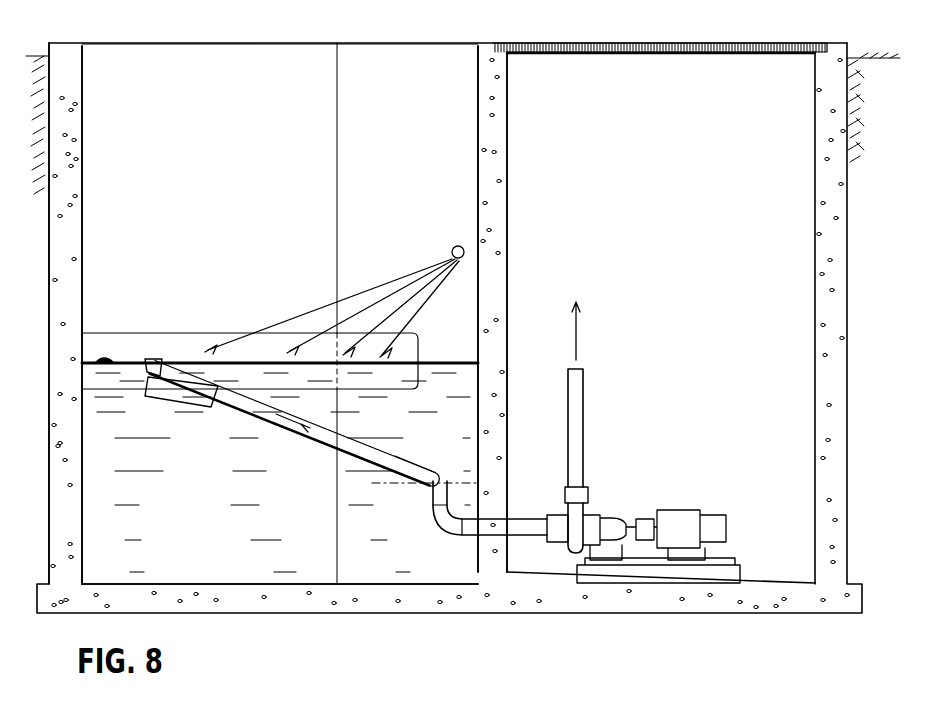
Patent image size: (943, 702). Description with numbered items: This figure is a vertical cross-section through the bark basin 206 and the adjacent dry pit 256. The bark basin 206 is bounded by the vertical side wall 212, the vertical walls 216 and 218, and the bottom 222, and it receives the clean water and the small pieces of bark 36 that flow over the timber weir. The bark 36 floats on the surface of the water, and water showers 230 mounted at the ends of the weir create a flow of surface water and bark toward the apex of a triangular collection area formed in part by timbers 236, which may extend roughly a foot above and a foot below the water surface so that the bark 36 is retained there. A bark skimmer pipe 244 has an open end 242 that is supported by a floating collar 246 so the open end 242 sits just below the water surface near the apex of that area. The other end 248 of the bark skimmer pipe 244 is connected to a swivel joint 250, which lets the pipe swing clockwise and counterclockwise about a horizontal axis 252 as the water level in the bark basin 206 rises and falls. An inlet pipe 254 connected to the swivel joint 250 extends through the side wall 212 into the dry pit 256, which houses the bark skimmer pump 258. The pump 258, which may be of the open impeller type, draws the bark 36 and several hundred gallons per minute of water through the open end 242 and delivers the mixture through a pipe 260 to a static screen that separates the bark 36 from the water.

The bark basin 206 is at (193, 521).
The vertical side wall 212 is at (476, 72).
The vertical wall 216 is at (82, 175).
The vertical wall 218 is at (236, 60).
The bottom 222 is at (288, 584).
The water shower 230 is at (457, 246).
The timber 236 is at (428, 349).
The small pieces of bark 36 is at (105, 353).
The open end 242 is at (173, 358).
The bark skimmer pipe 244 is at (320, 445).
The floating collar 246 is at (193, 395).
The other end 248 is at (406, 456).
The swivel joint 250 is at (440, 490).
The horizontal axis 252 is at (456, 476).
The inlet pipe 254 is at (525, 525).
The dry pit 256 is at (707, 241).
The bark skimmer pump 258 is at (588, 518).
The pipe 260 is at (581, 459).